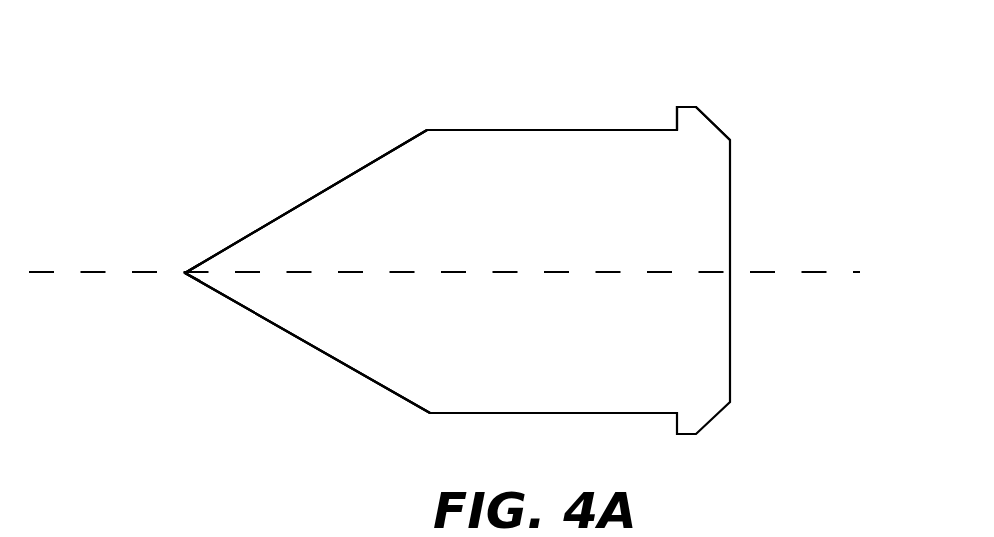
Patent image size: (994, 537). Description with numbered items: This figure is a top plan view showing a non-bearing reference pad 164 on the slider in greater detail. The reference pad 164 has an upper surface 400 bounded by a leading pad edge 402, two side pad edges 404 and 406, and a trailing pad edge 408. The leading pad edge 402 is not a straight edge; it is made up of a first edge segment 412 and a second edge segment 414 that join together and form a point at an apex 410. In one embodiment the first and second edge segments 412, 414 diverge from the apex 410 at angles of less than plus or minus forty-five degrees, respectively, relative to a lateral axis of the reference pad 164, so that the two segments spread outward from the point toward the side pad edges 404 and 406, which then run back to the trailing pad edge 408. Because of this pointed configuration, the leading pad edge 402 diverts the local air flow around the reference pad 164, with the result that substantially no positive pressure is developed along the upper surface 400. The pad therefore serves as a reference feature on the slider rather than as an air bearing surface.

The reference pad 164 is at (582, 112).
The upper surface 400 is at (673, 237).
The leading pad edge 402 is at (264, 213).
The side pad edge 404 is at (505, 130).
The side pad edge 406 is at (495, 415).
The trailing pad edge 408 is at (815, 270).
The apex 410 is at (185, 275).
The first edge segment 412 is at (347, 178).
The second edge segment 414 is at (328, 358).